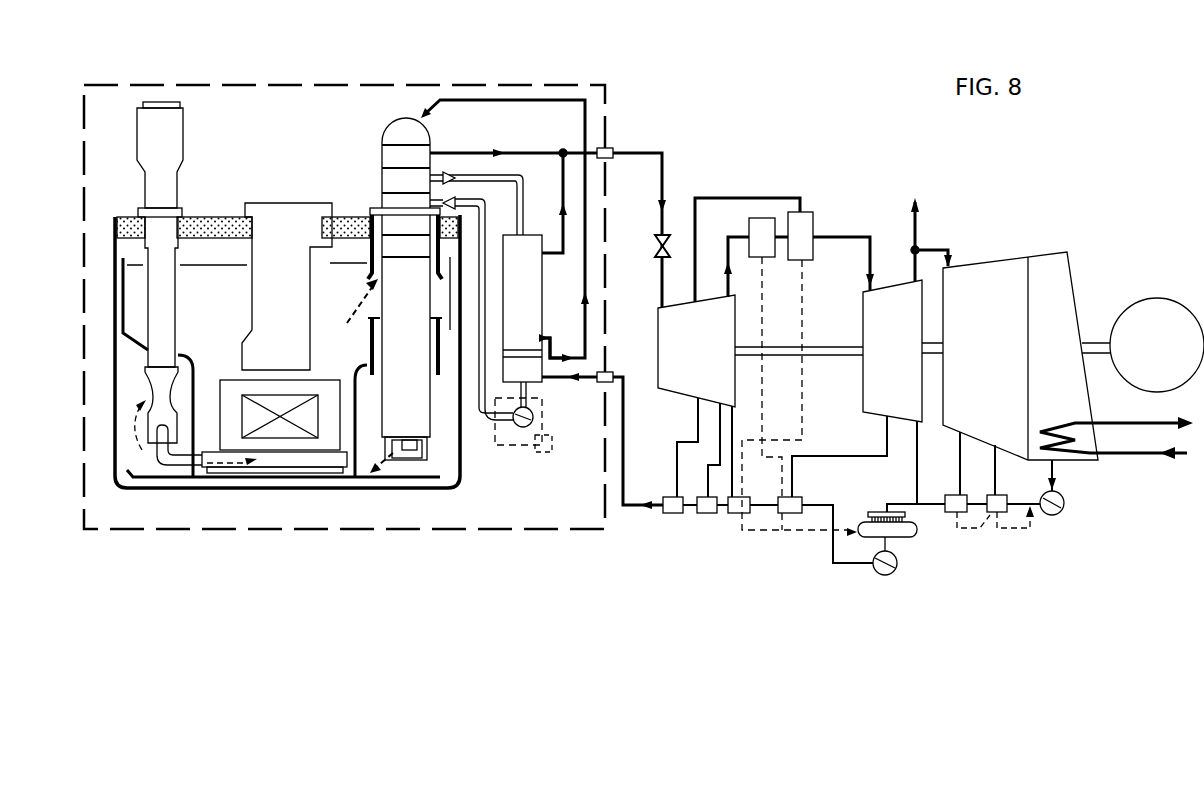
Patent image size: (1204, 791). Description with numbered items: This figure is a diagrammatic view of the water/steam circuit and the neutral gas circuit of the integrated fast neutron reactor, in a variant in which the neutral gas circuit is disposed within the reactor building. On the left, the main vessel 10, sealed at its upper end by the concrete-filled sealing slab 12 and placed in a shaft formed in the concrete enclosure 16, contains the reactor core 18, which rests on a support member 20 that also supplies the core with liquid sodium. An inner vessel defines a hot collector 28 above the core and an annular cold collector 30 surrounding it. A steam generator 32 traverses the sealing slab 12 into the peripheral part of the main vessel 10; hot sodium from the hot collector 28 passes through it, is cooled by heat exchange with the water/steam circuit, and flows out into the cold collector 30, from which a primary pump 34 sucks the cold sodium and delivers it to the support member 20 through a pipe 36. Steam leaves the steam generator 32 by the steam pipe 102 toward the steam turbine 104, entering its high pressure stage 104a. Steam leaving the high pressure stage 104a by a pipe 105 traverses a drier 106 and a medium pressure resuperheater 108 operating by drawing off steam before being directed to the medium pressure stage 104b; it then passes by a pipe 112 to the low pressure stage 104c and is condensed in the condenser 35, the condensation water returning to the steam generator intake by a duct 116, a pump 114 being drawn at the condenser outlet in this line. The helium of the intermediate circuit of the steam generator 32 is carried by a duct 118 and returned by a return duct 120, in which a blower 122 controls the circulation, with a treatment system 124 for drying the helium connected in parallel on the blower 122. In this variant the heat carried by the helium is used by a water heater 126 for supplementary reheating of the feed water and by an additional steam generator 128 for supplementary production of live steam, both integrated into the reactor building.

The main vessel 10 is at (113, 458).
The sealing slab 12 is at (125, 226).
The concrete enclosure 16 is at (366, 370).
The reactor core 18 is at (277, 403).
The support member 20 is at (296, 463).
The hot collector 28 is at (226, 328).
The cold collector 30 is at (447, 433).
The steam generator 32 is at (375, 188).
The primary pump 34 is at (183, 183).
The pipe 36 is at (180, 466).
The condenser 35 is at (1057, 388).
The steam pipe 102 is at (632, 153).
The steam turbine 104 is at (915, 337).
The high pressure stage 104a is at (685, 365).
The medium pressure stage 104b is at (882, 373).
The low pressure stage 104c is at (995, 282).
The pipe 105 is at (728, 237).
The drier 106 is at (764, 222).
The medium pressure resuperheater 108 is at (800, 222).
The pipe 112 is at (933, 250).
The pump 114 is at (1107, 455).
The duct 116 is at (457, 102).
The duct 118 is at (527, 218).
The return duct 120 is at (474, 404).
The blower 122 is at (533, 414).
The treatment system 124 is at (552, 443).
The water heater 126 is at (523, 363).
The additional steam generator 128 is at (530, 280).